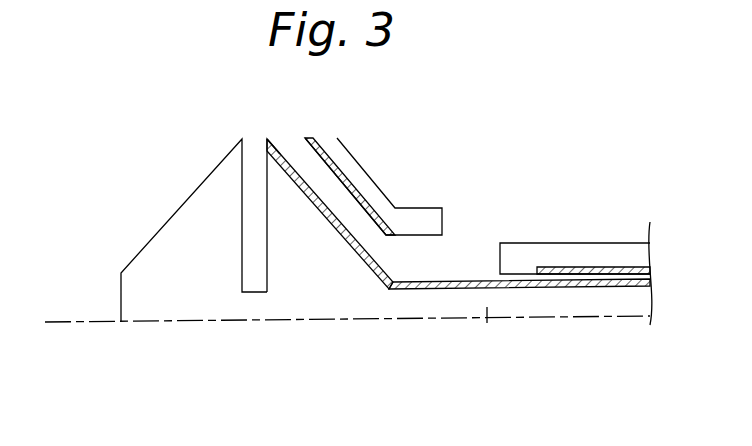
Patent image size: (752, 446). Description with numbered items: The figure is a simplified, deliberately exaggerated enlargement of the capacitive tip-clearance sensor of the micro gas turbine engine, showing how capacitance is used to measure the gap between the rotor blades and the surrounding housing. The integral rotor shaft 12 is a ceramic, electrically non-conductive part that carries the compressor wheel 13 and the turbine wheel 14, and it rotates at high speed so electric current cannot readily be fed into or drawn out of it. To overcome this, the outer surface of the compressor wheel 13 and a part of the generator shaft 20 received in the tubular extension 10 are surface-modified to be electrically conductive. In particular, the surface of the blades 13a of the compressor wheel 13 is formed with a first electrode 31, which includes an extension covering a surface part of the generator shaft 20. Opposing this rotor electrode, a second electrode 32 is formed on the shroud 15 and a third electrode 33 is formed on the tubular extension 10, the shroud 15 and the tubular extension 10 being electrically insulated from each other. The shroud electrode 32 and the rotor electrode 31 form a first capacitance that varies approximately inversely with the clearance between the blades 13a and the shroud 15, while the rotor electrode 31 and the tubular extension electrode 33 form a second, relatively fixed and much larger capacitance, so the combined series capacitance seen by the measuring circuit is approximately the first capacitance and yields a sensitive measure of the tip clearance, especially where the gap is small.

The tubular extension 10 is at (603, 250).
The integral rotor shaft 12 is at (322, 330).
The compressor wheel 13 is at (317, 267).
The blades 13a is at (275, 160).
The turbine wheel 14 is at (183, 257).
The shroud 15 is at (345, 150).
The generator shaft 20 is at (487, 307).
The first electrode 31 is at (456, 281).
The second electrode 32 is at (360, 198).
The third electrode 33 is at (560, 267).